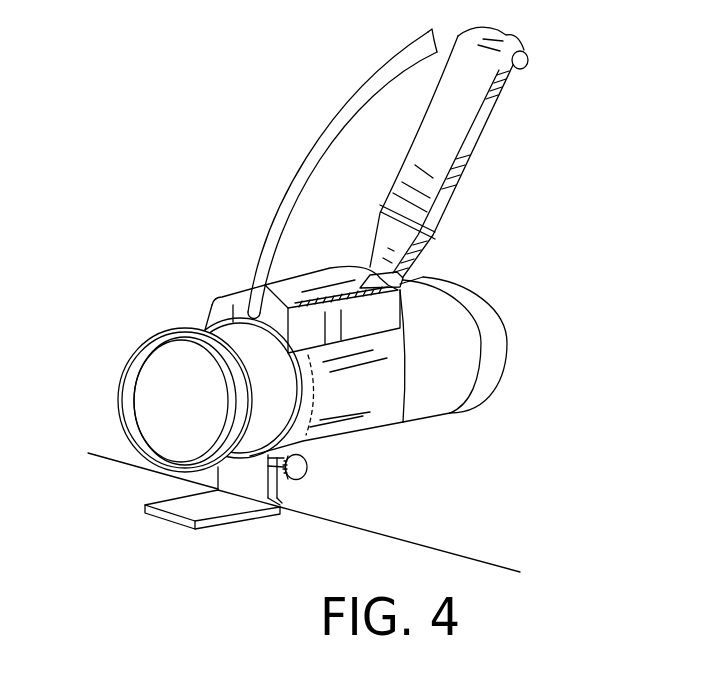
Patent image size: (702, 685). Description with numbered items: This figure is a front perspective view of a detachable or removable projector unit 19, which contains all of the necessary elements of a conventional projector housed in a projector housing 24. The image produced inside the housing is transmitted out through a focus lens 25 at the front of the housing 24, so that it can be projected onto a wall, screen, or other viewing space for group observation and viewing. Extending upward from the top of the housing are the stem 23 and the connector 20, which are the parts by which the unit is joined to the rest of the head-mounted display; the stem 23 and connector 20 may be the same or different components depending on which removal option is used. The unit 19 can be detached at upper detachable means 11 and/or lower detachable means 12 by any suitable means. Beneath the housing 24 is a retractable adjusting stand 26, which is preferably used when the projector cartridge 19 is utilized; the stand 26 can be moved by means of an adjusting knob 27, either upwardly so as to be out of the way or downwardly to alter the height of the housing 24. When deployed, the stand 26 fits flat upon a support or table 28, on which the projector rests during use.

The upper detachable means 11 is at (505, 40).
The lower detachable means 12 is at (380, 275).
The detachable projector unit 19 is at (502, 276).
The connector 20 is at (355, 103).
The stem 23 is at (480, 157).
The projector housing 24 is at (500, 352).
The focus lens 25 is at (143, 388).
The retractable adjusting stand 26 is at (248, 483).
The adjusting knob 27 is at (307, 473).
The support or table 28 is at (417, 540).